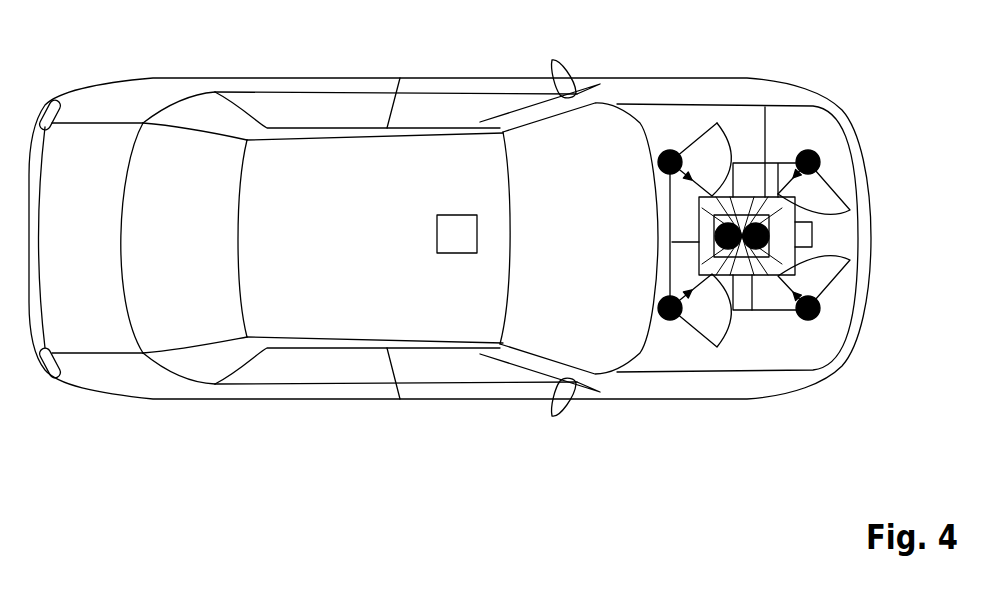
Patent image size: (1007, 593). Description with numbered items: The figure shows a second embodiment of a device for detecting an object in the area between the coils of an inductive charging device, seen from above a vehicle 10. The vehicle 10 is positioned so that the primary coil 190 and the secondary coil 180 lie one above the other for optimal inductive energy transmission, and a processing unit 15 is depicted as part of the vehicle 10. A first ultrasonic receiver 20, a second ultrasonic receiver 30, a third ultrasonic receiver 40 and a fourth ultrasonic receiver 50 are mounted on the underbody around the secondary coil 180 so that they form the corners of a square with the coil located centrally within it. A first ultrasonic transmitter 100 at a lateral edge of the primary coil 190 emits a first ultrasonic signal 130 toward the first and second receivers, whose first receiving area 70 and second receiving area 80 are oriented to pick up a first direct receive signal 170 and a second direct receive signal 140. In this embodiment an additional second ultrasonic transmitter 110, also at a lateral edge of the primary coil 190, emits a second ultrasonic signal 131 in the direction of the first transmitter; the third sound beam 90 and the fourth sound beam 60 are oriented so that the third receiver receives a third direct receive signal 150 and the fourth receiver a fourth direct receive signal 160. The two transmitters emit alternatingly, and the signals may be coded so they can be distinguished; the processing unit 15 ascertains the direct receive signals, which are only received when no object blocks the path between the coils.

The vehicle 10 is at (332, 165).
The processing unit 15 is at (440, 240).
The first ultrasonic receiver 20 is at (818, 150).
The second ultrasonic receiver 30 is at (818, 318).
The third ultrasonic receiver 40 is at (670, 322).
The fourth ultrasonic receiver 50 is at (670, 150).
The fourth sound beam 60 is at (722, 124).
The first receiving area 70 is at (838, 190).
The second receiving area 80 is at (823, 282).
The third sound beam 90 is at (727, 355).
The first ultrasonic transmitter 100 is at (700, 240).
The second ultrasonic transmitter 110 is at (812, 243).
The first ultrasonic signal 130 is at (765, 107).
The second ultrasonic signal 131 is at (838, 152).
The second direct receive signal 140 is at (805, 362).
The third direct receive signal 150 is at (748, 352).
The fourth direct receive signal 160 is at (700, 140).
The first direct receive signal 170 is at (822, 142).
The secondary coil 180 is at (700, 208).
The primary coil 190 is at (700, 262).